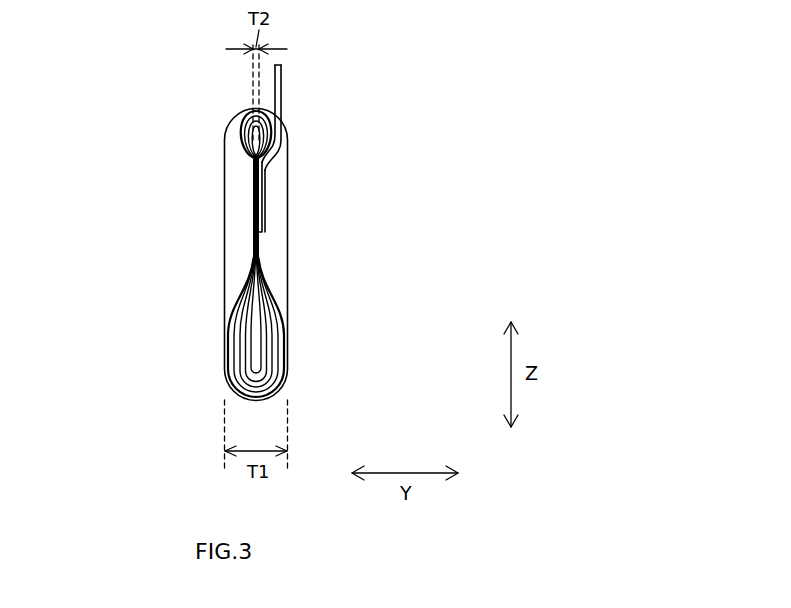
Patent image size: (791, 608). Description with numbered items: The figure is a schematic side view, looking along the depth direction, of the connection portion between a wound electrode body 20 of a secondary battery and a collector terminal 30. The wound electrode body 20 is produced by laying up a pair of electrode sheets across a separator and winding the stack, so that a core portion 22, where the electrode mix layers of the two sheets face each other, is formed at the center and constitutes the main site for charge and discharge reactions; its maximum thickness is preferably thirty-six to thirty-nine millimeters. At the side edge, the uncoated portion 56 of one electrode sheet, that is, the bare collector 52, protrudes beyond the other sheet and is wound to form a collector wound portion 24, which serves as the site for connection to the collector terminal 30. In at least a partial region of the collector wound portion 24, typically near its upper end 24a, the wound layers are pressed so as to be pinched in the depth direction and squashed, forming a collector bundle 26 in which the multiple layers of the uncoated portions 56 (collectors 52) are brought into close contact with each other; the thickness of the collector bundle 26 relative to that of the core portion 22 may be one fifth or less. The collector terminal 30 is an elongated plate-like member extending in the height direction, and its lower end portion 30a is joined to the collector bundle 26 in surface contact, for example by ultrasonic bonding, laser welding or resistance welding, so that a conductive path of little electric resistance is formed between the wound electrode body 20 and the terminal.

The wound electrode body 20 is at (171, 138).
The core portion 22 is at (288, 257).
The collector wound portion 24 is at (281, 298).
The upper end of collector wound portion 24a is at (243, 113).
The collector bundle 26 is at (254, 211).
The collector terminal 30 is at (281, 84).
The lower end portion of collector terminal 30a is at (263, 204).
The uncoated portion 56 is at (273, 357).
The collector 52 is at (313, 327).